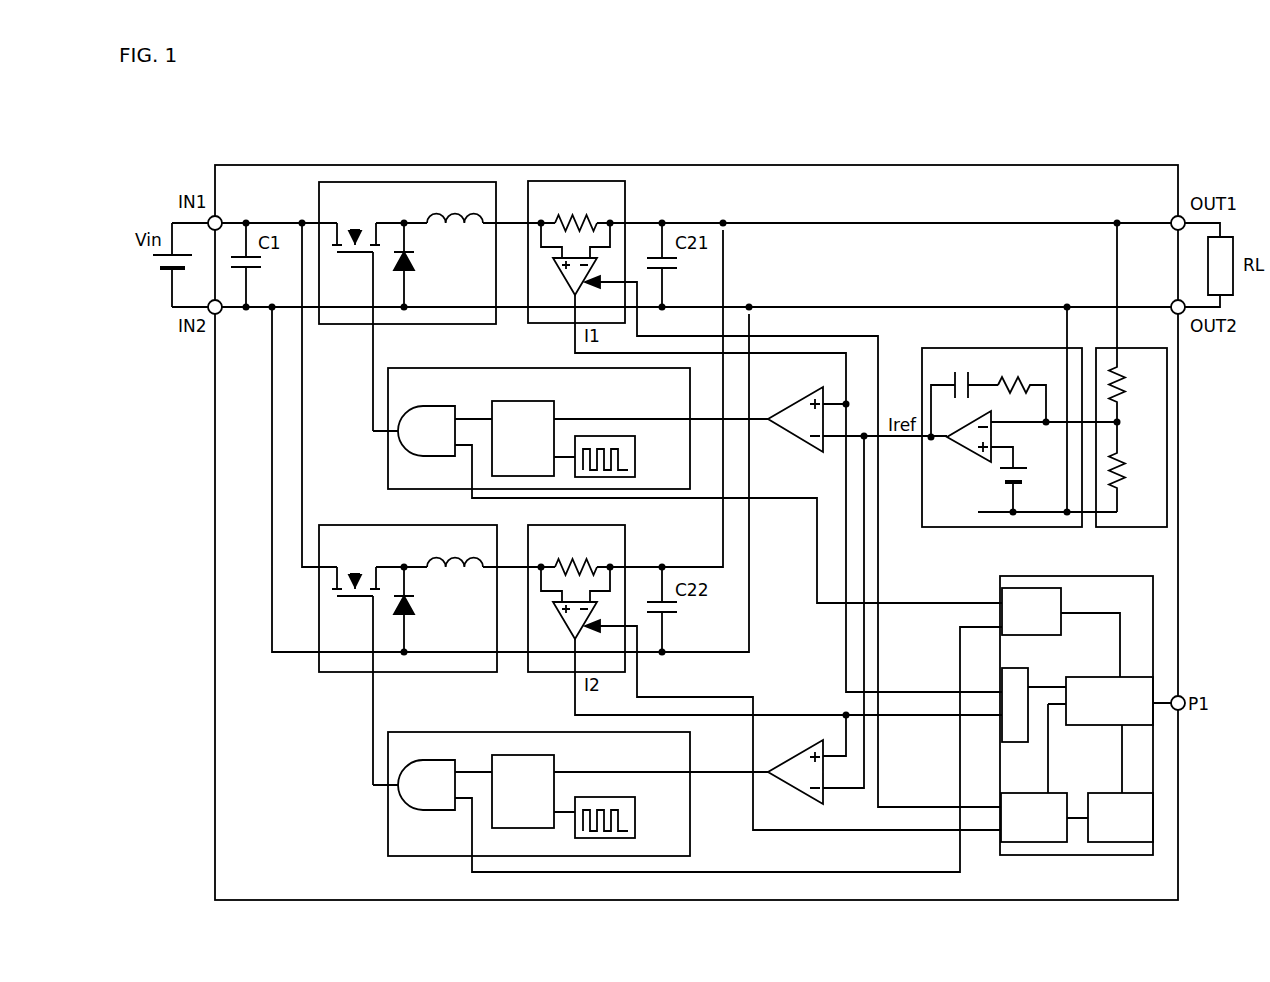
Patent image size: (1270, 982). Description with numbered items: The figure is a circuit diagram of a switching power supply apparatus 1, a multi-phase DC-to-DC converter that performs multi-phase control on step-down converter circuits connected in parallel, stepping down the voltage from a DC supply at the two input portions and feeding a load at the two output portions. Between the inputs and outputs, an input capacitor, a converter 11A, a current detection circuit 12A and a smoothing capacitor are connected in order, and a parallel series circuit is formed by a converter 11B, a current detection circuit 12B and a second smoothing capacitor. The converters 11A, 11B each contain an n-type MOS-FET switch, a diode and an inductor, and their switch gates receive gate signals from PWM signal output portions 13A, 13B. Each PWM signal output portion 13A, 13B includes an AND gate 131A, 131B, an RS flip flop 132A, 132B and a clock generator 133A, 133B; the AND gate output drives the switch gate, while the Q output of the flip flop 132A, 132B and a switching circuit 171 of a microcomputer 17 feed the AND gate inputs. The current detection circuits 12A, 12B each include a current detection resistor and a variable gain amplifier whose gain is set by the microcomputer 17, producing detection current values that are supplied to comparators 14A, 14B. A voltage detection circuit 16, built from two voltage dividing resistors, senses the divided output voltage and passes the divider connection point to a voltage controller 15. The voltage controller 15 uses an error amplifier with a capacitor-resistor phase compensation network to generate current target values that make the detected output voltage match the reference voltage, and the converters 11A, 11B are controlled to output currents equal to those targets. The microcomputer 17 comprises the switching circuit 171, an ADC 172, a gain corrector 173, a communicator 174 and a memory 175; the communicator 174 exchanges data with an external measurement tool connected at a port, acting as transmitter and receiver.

The switching power supply apparatus 1 is at (215, 181).
The converter 11A is at (319, 194).
The current detection circuit 12A is at (625, 196).
The PWM signal output portion 13A is at (451, 368).
The AND gate 131A is at (431, 406).
The RS flip flop 132A is at (562, 397).
The clock generator 133A is at (636, 464).
The comparator 14A is at (799, 399).
The voltage controller 15 is at (998, 348).
The voltage detection circuit 16 is at (1133, 348).
The converter 11B is at (356, 525).
The current detection circuit 12B is at (625, 541).
The PWM signal output portion 13B is at (420, 732).
The AND gate 131B is at (431, 770).
The RS flip flop 132B is at (562, 761).
The clock generator 133B is at (636, 826).
The comparator 14B is at (788, 760).
The microcomputer 17 is at (1153, 600).
The switching circuit 171 is at (998, 589).
The ADC 172 is at (1040, 668).
The gain corrector 173 is at (1042, 842).
The communicator 174 is at (1153, 680).
The memory 175 is at (1128, 842).